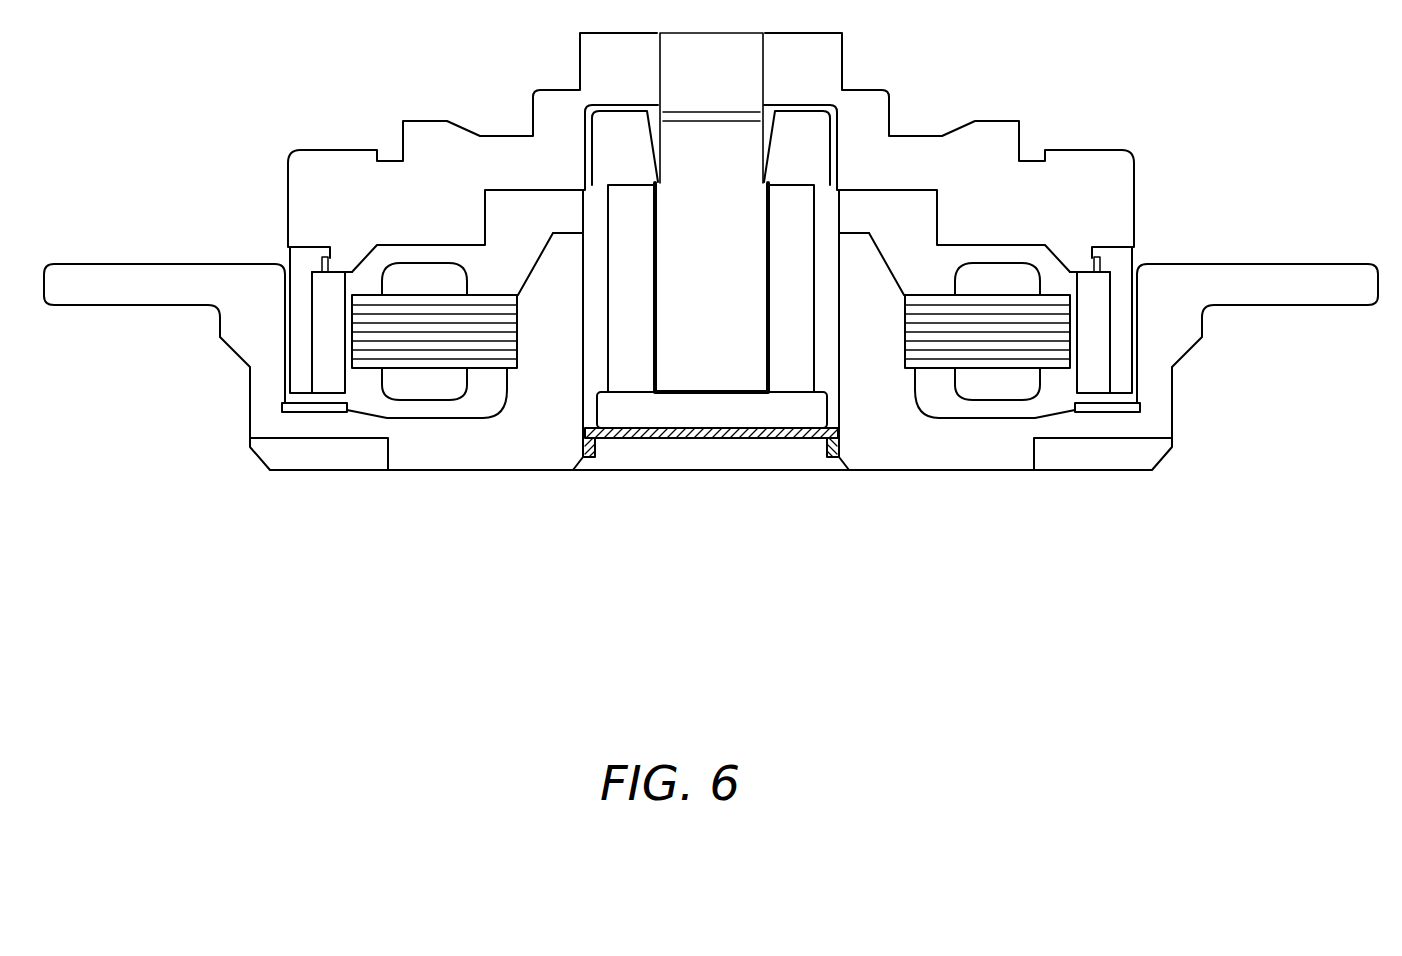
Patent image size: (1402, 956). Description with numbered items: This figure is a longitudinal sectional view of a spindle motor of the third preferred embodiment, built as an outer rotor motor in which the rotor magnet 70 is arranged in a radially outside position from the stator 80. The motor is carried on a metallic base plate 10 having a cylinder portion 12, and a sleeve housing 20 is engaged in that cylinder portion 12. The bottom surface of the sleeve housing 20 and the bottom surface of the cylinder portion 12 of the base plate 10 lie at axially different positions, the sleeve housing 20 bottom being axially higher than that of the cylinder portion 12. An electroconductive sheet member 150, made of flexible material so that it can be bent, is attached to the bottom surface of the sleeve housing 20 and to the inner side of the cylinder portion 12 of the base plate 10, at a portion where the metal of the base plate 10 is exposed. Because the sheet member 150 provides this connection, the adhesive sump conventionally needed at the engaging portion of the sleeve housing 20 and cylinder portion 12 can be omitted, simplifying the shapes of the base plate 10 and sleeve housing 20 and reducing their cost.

The base plate 10 is at (483, 476).
The cylinder portion 12 is at (857, 373).
The sleeve housing 20 is at (597, 332).
The rotor magnet 70 is at (1097, 310).
The stator 80 is at (943, 378).
The electroconductive sheet member 150 is at (684, 462).